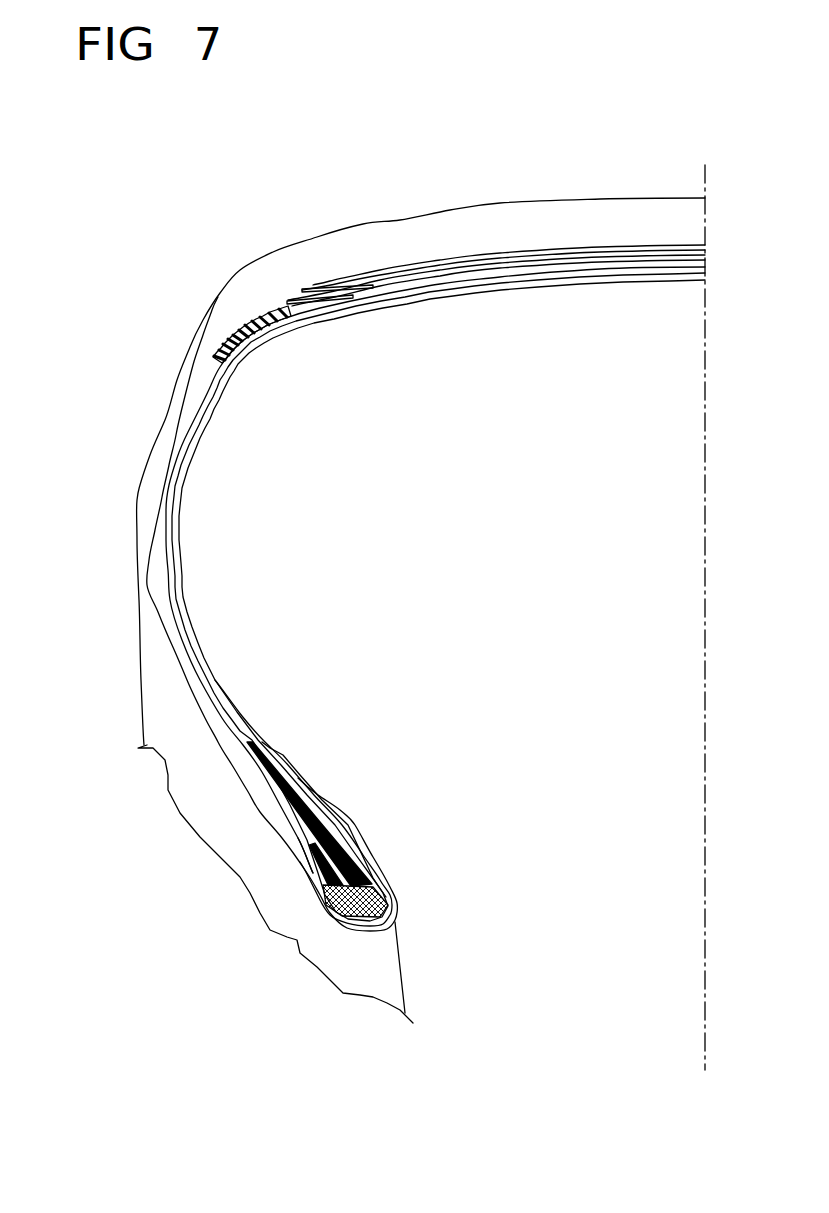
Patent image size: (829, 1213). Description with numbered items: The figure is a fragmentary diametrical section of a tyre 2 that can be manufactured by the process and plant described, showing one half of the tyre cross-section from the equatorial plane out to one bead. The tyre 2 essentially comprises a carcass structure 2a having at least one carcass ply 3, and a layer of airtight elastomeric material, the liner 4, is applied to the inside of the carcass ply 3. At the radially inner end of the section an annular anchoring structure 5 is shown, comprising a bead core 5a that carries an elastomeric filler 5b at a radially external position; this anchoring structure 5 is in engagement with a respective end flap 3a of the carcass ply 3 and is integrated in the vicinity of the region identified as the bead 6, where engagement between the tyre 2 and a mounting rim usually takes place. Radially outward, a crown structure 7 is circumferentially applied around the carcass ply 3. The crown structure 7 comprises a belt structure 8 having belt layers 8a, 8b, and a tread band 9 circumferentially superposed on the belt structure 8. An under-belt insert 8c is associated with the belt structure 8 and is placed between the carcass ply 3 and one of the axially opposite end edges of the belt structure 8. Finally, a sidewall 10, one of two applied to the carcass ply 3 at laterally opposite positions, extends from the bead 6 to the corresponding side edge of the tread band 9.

The tyre 2 is at (102, 592).
The carcass structure 2a is at (298, 762).
The carcass ply 3 is at (207, 682).
The end flaps of the carcass ply 3a is at (313, 873).
The liner 4 is at (315, 327).
The annular anchoring structure 5 is at (334, 814).
The bead core 5a is at (397, 897).
The elastomeric filler 5b is at (311, 845).
The bead 6 is at (375, 847).
The crown structure 7 is at (664, 245).
The belt structure 8 is at (594, 268).
The belt layer 8a is at (535, 262).
The belt layer 8b is at (482, 257).
The under-belt insert 8c is at (280, 310).
The tread band 9 is at (588, 215).
The sidewall 10 is at (147, 472).